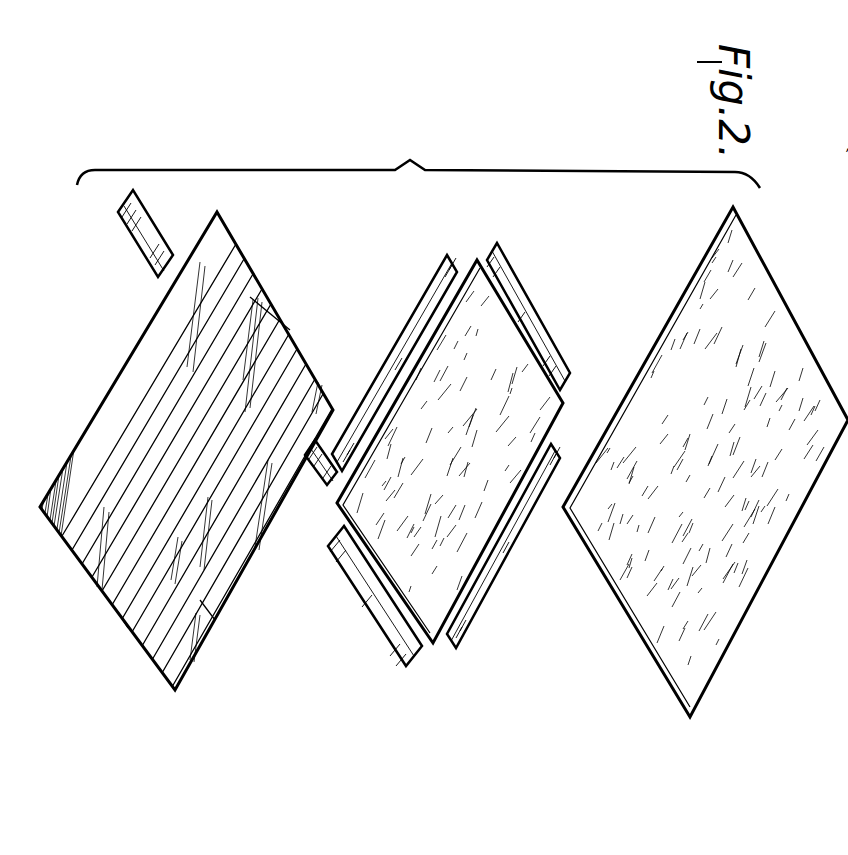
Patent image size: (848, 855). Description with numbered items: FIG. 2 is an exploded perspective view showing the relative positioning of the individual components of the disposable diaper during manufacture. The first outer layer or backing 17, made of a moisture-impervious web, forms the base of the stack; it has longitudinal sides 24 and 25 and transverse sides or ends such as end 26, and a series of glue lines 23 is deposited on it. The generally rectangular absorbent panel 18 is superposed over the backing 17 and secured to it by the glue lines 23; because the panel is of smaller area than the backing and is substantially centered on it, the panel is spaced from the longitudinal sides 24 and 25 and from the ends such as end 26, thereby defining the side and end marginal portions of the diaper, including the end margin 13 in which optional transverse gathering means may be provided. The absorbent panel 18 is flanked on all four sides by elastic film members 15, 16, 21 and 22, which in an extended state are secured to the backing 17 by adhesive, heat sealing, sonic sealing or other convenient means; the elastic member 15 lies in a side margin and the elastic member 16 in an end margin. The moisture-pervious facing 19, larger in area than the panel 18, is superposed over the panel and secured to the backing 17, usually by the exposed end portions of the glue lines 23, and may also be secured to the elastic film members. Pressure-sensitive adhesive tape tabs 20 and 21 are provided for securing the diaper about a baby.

The end margin 13 is at (123, 622).
The elastic member 15 is at (522, 528).
The elastic member 16 is at (418, 640).
The backing 17 is at (207, 610).
The absorbent panel 18 is at (543, 390).
The facing 19 is at (810, 358).
The pressure-sensitive adhesive tape tab 20 is at (320, 500).
The elastic film member 21 is at (407, 330).
The elastic film member 22 is at (517, 285).
The glue lines 23 is at (260, 300).
The longitudinal side 24 is at (137, 338).
The longitudinal side 25 is at (237, 583).
The transverse side 26 is at (235, 237).